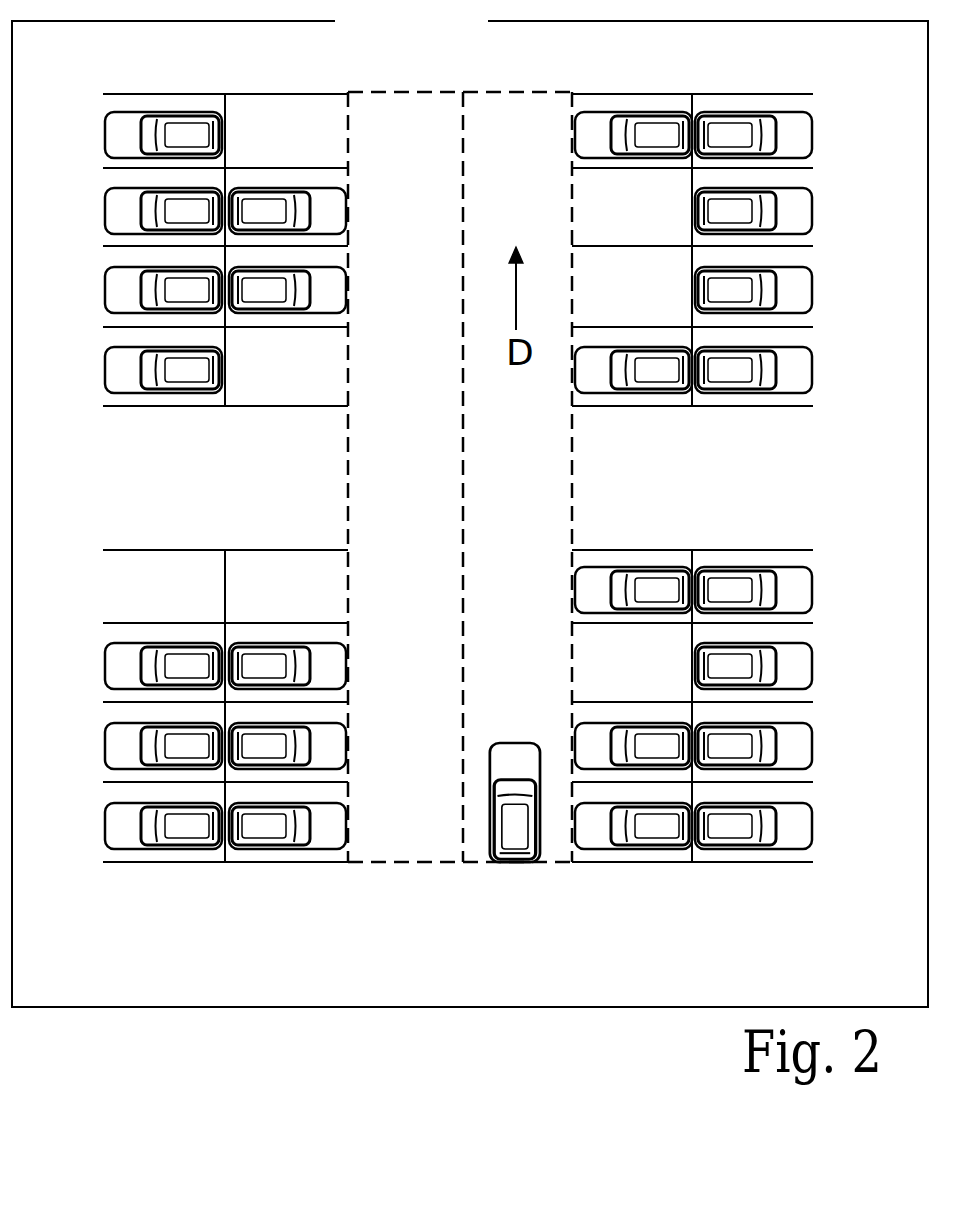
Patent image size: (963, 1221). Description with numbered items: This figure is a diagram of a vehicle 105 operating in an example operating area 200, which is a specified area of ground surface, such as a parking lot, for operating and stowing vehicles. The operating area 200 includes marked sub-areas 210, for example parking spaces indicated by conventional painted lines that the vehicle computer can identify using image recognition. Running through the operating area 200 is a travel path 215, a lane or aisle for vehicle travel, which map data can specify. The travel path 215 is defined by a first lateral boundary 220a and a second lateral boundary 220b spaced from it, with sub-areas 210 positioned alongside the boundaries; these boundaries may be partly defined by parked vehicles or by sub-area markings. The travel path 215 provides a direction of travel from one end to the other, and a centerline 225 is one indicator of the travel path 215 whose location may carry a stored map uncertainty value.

The operating area 200 is at (278, 1011).
The sub-area 210 is at (208, 608).
The travel path 215 is at (399, 874).
The first lateral boundary 220a is at (348, 512).
The second lateral boundary 220b is at (572, 447).
The centerline 225 is at (463, 490).
The vehicle 105 is at (547, 722).